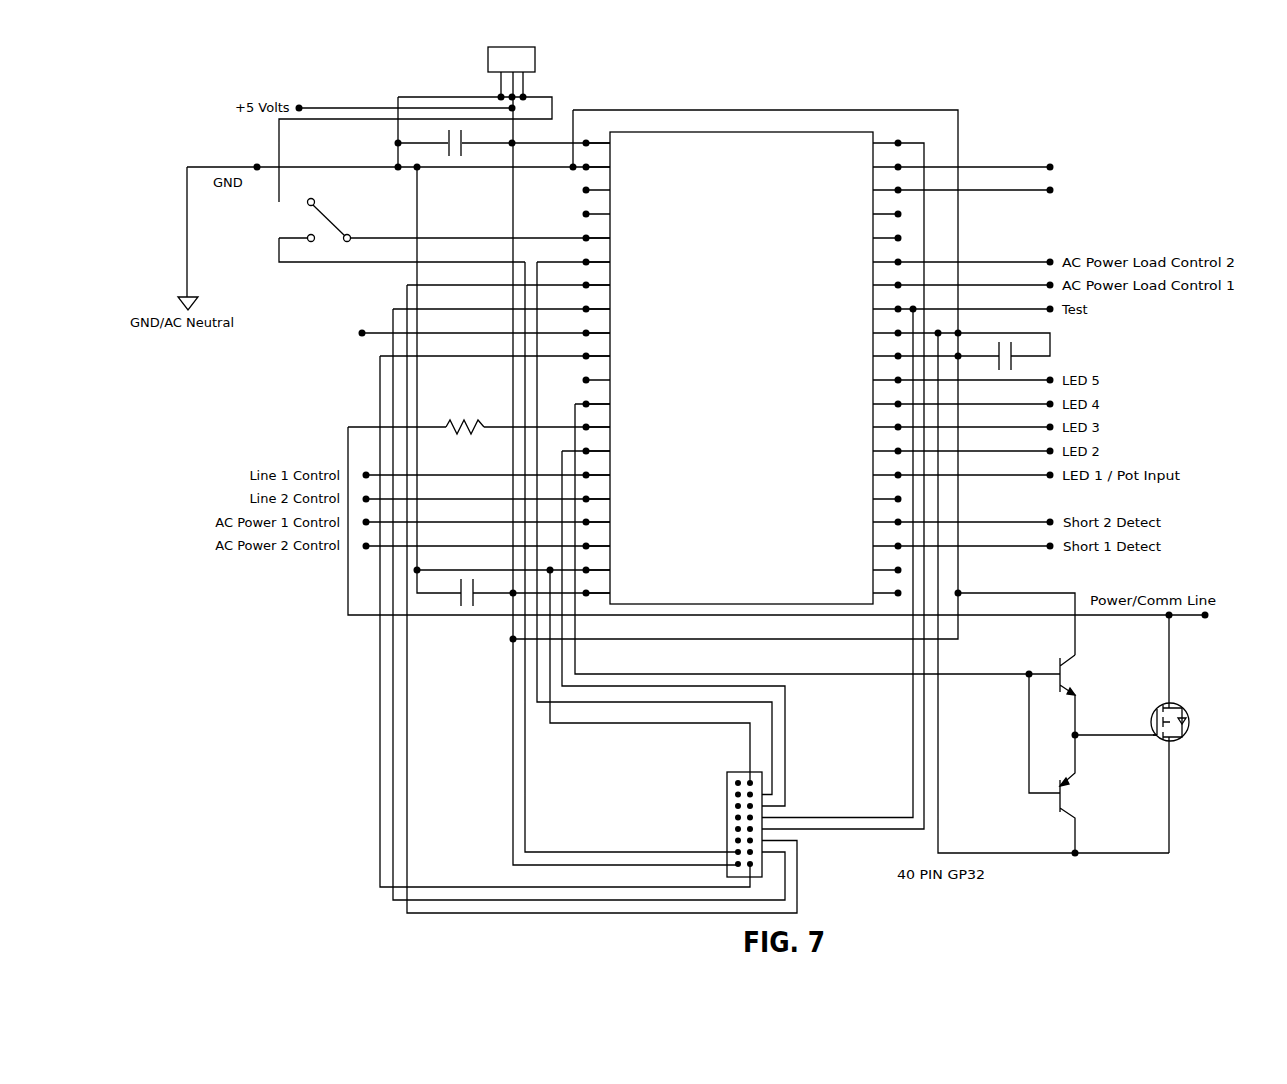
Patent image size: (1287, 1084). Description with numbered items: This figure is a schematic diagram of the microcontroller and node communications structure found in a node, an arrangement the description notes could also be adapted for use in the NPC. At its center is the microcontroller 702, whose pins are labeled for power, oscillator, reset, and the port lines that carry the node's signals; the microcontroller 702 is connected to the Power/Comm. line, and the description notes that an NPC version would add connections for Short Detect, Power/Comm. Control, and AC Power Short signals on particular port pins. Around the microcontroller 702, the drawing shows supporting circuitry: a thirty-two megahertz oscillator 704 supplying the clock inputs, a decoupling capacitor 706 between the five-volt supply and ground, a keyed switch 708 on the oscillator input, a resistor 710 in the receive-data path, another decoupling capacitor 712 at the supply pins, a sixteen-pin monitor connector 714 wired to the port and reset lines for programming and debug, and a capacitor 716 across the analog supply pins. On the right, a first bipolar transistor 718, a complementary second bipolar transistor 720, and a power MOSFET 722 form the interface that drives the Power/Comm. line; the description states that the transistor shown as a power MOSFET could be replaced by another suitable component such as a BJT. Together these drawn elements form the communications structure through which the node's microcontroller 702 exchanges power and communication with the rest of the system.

The microcontroller 702 is at (766, 412).
The 32 MHz oscillator 704 is at (535, 60).
The capacitor C1 706 is at (452, 152).
The switch J1 708 is at (330, 218).
The resistor R1 710 is at (455, 419).
The capacitor C2 712 is at (480, 608).
The MON08 connector 714 is at (726, 785).
The capacitor C3 716 is at (1020, 350).
The transistor Q3 718 is at (1078, 668).
The transistor Q2 720 is at (1066, 814).
The MOSFET Q3 722 is at (1188, 738).